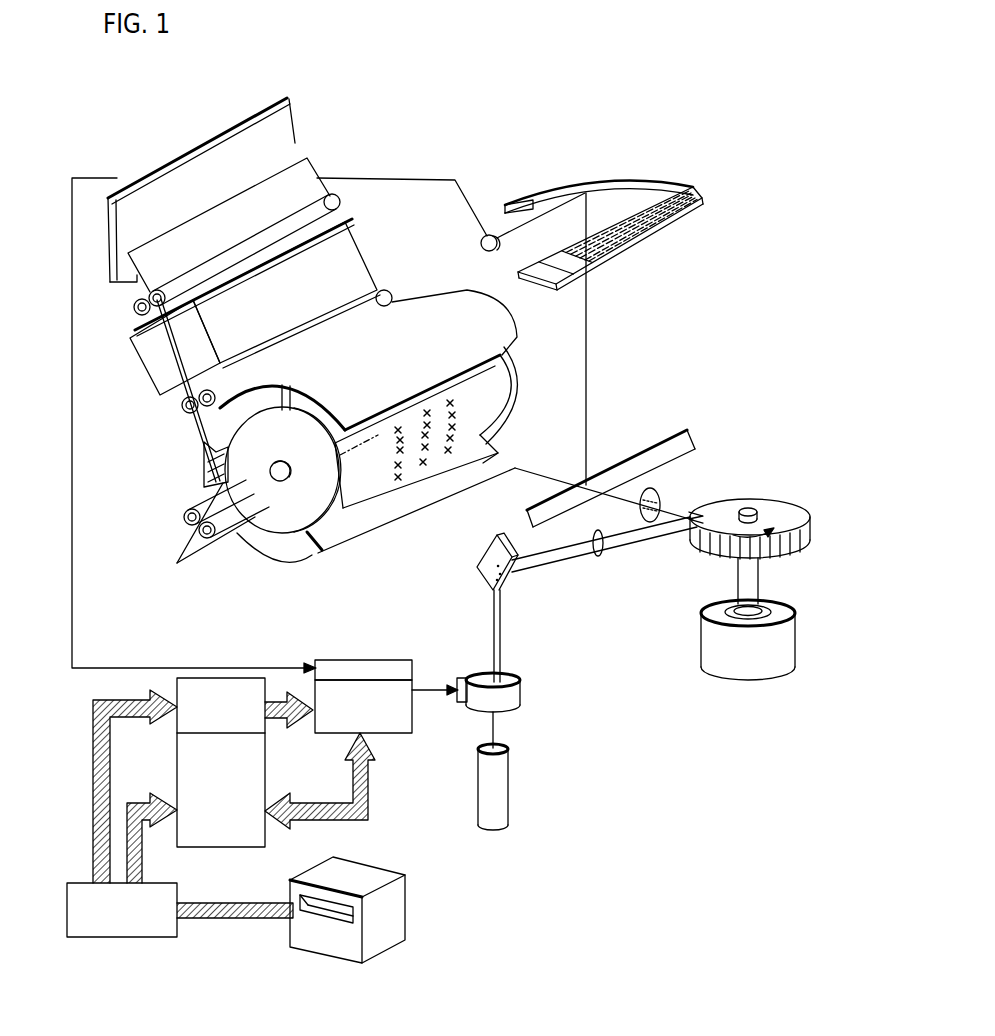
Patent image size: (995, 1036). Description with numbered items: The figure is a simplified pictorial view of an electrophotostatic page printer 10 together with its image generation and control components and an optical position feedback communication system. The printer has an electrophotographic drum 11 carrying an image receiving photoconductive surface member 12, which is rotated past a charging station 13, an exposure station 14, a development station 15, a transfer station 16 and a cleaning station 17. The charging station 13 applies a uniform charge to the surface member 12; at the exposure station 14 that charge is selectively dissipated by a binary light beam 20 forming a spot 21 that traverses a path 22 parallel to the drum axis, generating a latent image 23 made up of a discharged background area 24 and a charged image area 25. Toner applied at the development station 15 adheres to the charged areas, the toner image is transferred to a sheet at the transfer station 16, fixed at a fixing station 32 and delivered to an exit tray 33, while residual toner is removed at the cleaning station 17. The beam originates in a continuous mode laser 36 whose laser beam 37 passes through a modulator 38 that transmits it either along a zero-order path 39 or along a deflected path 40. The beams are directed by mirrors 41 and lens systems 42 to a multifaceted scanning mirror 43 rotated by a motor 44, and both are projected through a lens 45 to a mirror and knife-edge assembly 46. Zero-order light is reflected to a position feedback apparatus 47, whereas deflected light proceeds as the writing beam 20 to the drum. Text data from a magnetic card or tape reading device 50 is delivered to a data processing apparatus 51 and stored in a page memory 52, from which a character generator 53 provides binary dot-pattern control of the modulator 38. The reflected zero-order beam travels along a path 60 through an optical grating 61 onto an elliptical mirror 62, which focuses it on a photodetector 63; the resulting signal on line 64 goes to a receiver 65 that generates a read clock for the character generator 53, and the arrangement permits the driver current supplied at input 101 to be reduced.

The page printer 10 is at (232, 549).
The electrophotographic drum 11 is at (283, 437).
The photoconductive surface member 12 is at (500, 360).
The charging station 13 is at (477, 306).
The exposure station 14 is at (408, 407).
The development station 15 is at (282, 546).
The transfer station 16 is at (204, 467).
The cleaning station 17 is at (300, 362).
The light beam 20 is at (505, 471).
The spot 21 is at (374, 438).
The path 22 is at (324, 467).
The latent image 23 is at (509, 396).
The discharged background area 24 is at (390, 424).
The charged image area 25 is at (428, 405).
The fixing station 32 is at (153, 367).
The exit tray 33 is at (117, 286).
The laser 36 is at (500, 795).
The laser beam 37 is at (494, 728).
The modulator 38 is at (521, 699).
The zero-order path 39 is at (492, 640).
The deflected path 40 is at (497, 620).
The mirror 41 is at (481, 559).
The lens system 42 is at (603, 550).
The scanning mirror 43 is at (762, 503).
The motor 44 is at (710, 647).
The lens 45 is at (655, 494).
The mirror and knife-edge assembly 46 is at (684, 433).
The position feedback apparatus 47 is at (720, 213).
The magnetic card or tape reading device 50 is at (406, 891).
The data processing apparatus 51 is at (178, 891).
The page memory 52 is at (216, 679).
The character generator 53 is at (400, 735).
The path 60 is at (587, 350).
The optical grating 61 is at (661, 222).
The elliptical mirror 62 is at (605, 186).
The photodetector 63 is at (486, 245).
The line 64 is at (421, 178).
The receiver 65 is at (332, 658).
The input 101 is at (418, 693).